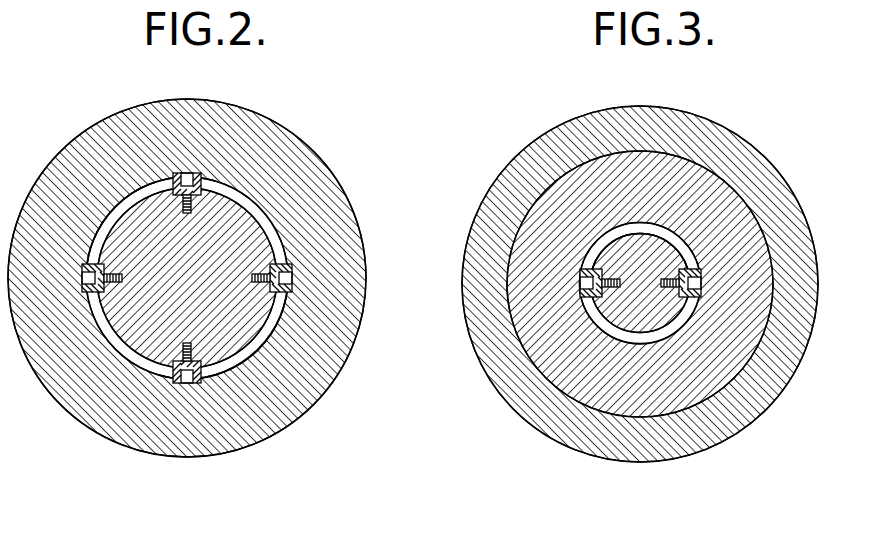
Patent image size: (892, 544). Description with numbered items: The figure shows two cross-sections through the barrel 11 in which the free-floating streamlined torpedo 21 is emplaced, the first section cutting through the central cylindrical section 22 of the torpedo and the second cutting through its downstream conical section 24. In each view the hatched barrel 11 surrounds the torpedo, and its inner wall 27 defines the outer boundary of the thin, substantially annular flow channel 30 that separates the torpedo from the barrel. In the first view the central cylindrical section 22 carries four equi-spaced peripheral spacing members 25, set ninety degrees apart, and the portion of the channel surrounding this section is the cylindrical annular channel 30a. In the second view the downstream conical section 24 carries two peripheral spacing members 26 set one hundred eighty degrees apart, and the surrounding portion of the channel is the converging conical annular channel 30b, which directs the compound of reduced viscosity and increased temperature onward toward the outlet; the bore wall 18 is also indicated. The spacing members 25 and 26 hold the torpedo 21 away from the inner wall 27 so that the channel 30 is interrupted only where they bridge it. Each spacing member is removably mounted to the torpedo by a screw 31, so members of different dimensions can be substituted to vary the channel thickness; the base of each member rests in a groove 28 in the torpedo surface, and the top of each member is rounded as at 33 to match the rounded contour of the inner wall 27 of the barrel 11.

In FIG. 2, the barrel 11 is at (313, 143).
In FIG. 3, the barrel 11 is at (544, 133).
In FIG. 3, the inner bore wall 18 is at (560, 393).
In FIG. 2, the free-floating streamlined torpedo 21 is at (125, 321).
In FIG. 3, the free-floating streamlined torpedo 21 is at (645, 257).
In FIG. 2, the central cylindrical section 22 is at (201, 309).
In FIG. 3, the downstream conical section 24 is at (656, 309).
In FIG. 2, the peripheral spacing members 25 is at (205, 182).
In FIG. 3, the peripheral spacing members 26 is at (578, 273).
In FIG. 2, the inner wall of barrel 27 is at (118, 206).
In FIG. 3, the inner wall of barrel 27 is at (594, 318).
In FIG. 2, the groove 28 is at (178, 198).
In FIG. 3, the groove 28 is at (606, 268).
In FIG. 2, the annular flow channel 30 is at (238, 373).
In FIG. 3, the annular flow channel 30 is at (663, 333).
In FIG. 2, the cylindrical annular channel 30a is at (279, 321).
In FIG. 3, the converging conical annular channel 30b is at (690, 321).
In FIG. 2, the screws 31 is at (186, 176).
In FIG. 3, the screws 31 is at (597, 285).
In FIG. 2, the rounded top 33 is at (85, 273).
In FIG. 3, the rounded top 33 is at (703, 297).